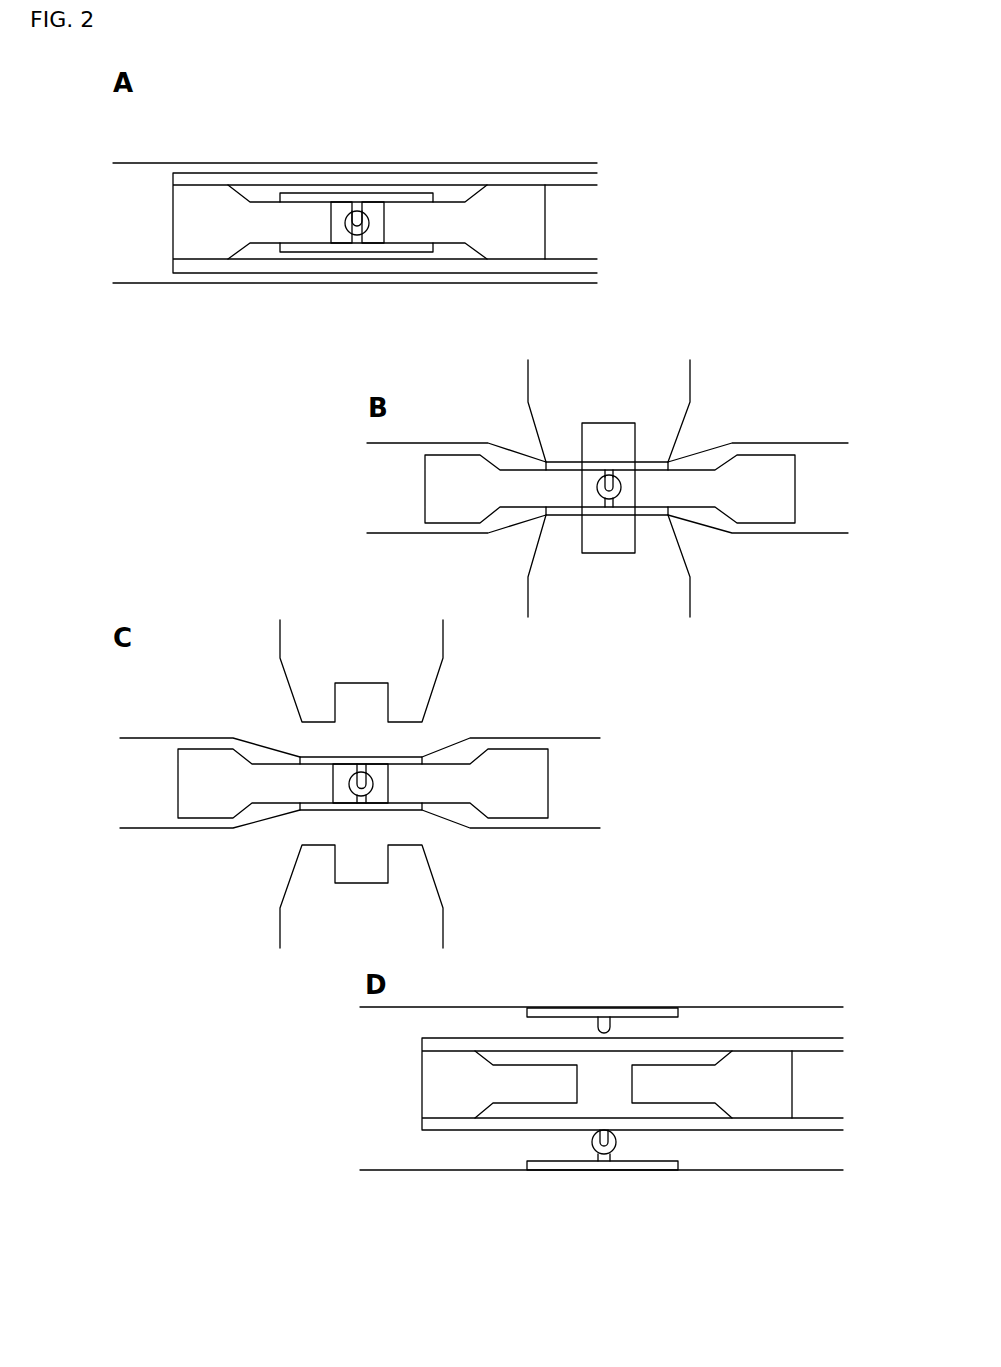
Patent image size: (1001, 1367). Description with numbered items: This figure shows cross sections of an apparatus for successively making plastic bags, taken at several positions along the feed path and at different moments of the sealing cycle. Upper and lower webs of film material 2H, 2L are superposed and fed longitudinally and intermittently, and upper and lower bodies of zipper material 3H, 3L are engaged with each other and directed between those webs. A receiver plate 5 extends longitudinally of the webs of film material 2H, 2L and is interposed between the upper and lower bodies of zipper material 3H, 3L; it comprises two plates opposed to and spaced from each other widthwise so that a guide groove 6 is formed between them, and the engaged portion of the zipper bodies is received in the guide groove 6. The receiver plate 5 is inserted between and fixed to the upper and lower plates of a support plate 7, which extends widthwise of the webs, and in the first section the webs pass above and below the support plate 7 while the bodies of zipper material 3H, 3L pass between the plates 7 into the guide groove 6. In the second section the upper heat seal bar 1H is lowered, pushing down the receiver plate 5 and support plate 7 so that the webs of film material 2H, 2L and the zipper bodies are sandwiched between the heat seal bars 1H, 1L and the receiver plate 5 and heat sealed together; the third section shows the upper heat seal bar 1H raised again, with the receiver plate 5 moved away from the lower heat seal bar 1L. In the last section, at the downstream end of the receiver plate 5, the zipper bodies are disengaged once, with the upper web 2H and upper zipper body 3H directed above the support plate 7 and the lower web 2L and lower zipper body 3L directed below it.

The upper heat seal bar 1H is at (673, 393).
The lower heat seal bar 1L is at (682, 587).
The upper web of film material 2H is at (230, 163).
The lower web of film material 2L is at (210, 283).
The upper body of zipper material 3H is at (375, 193).
The lower body of zipper material 3L is at (395, 252).
The receiver plate 5 is at (205, 195).
The guide groove 6 is at (333, 212).
The support plate 7 is at (570, 173).